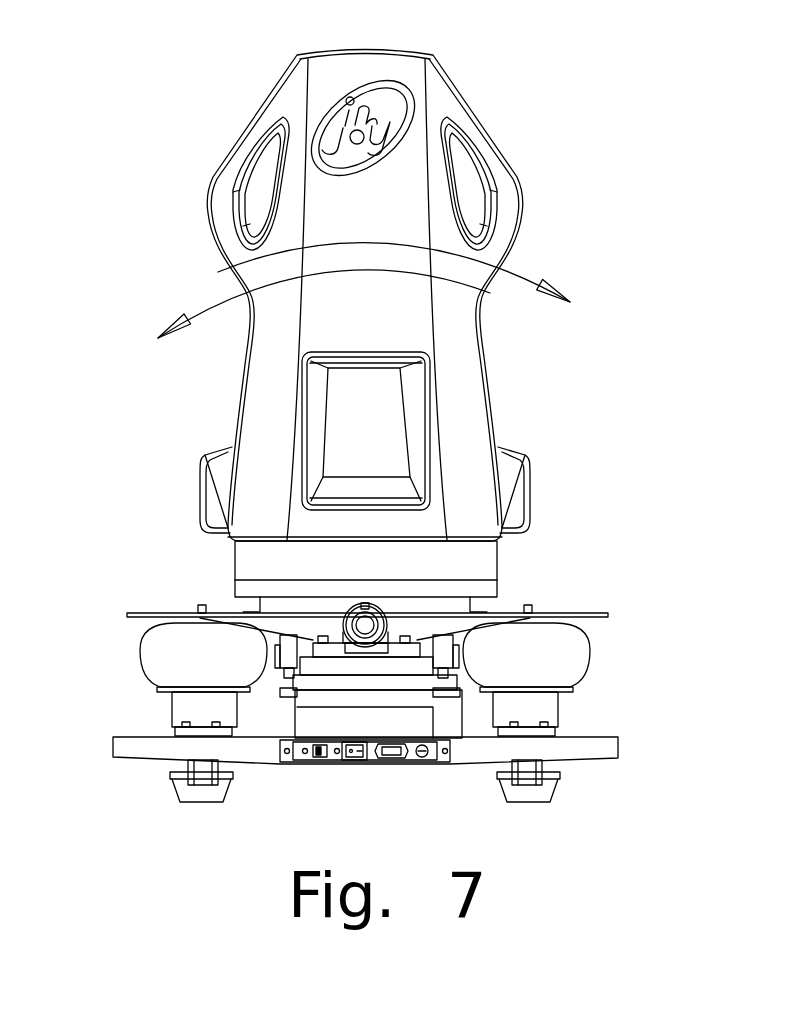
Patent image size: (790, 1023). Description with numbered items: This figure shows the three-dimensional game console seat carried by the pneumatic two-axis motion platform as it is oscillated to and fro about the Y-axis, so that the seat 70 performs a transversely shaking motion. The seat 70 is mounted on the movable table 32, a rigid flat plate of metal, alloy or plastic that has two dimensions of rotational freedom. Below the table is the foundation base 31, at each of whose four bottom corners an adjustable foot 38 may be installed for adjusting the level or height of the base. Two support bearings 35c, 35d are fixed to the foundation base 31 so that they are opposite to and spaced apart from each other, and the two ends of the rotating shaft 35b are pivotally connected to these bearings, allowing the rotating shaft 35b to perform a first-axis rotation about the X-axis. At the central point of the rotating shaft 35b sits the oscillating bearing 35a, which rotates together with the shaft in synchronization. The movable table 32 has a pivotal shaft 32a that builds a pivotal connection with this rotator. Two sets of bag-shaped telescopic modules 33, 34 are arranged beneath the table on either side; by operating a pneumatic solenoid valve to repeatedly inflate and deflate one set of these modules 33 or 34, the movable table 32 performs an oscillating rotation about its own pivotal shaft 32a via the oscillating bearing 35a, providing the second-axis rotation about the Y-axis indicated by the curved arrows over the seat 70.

The seat 70 is at (436, 54).
The foundation base 31 is at (620, 745).
The movable table 32 is at (585, 613).
The pivotal shaft 32a is at (365, 627).
The bag-shaped telescopic module 33 is at (150, 658).
The bag-shaped telescopic module 34 is at (583, 658).
The oscillating bearing 35a is at (365, 604).
The rotating shaft 35b is at (383, 665).
The support bearing 35c is at (291, 635).
The support bearing 35d is at (443, 635).
The adjustable foot 38 is at (172, 787).